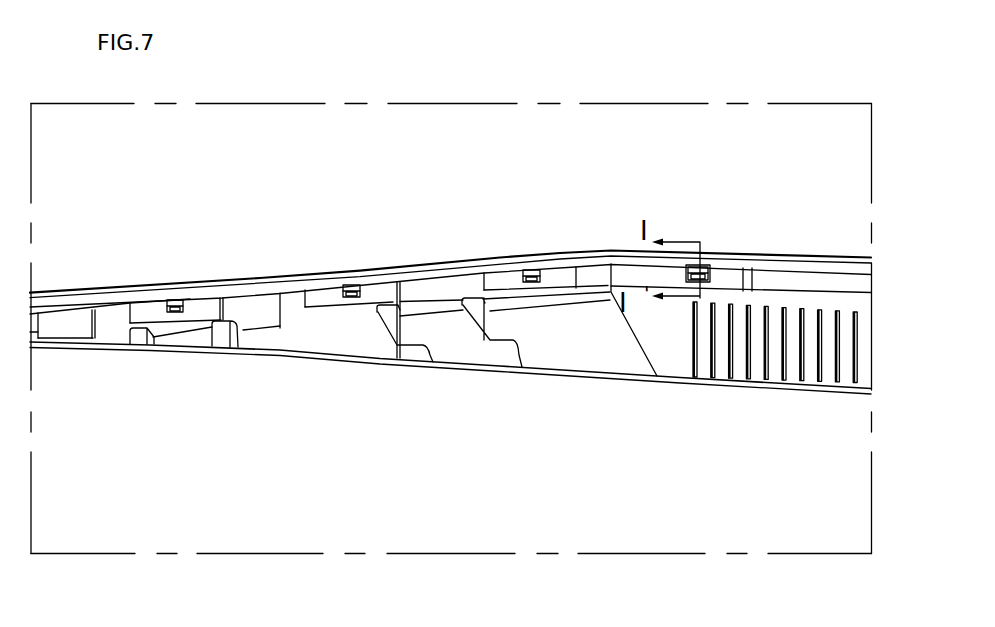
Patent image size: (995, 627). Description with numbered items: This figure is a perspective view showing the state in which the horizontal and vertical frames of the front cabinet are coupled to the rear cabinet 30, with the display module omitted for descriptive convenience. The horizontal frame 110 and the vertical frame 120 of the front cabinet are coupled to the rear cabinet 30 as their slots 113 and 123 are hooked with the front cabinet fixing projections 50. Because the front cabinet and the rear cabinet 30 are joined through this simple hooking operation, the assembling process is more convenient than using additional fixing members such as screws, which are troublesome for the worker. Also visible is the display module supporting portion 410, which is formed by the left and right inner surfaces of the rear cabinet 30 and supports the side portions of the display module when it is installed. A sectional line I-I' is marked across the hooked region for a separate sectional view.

The rear cabinet 30 is at (809, 305).
The front cabinet fixing projection 50 is at (343, 296).
The horizontal frame 110 is at (795, 263).
The slot 113 is at (707, 270).
The vertical frame 120 is at (548, 256).
The slot 123 is at (545, 278).
The display module supporting portion 410 is at (255, 308).